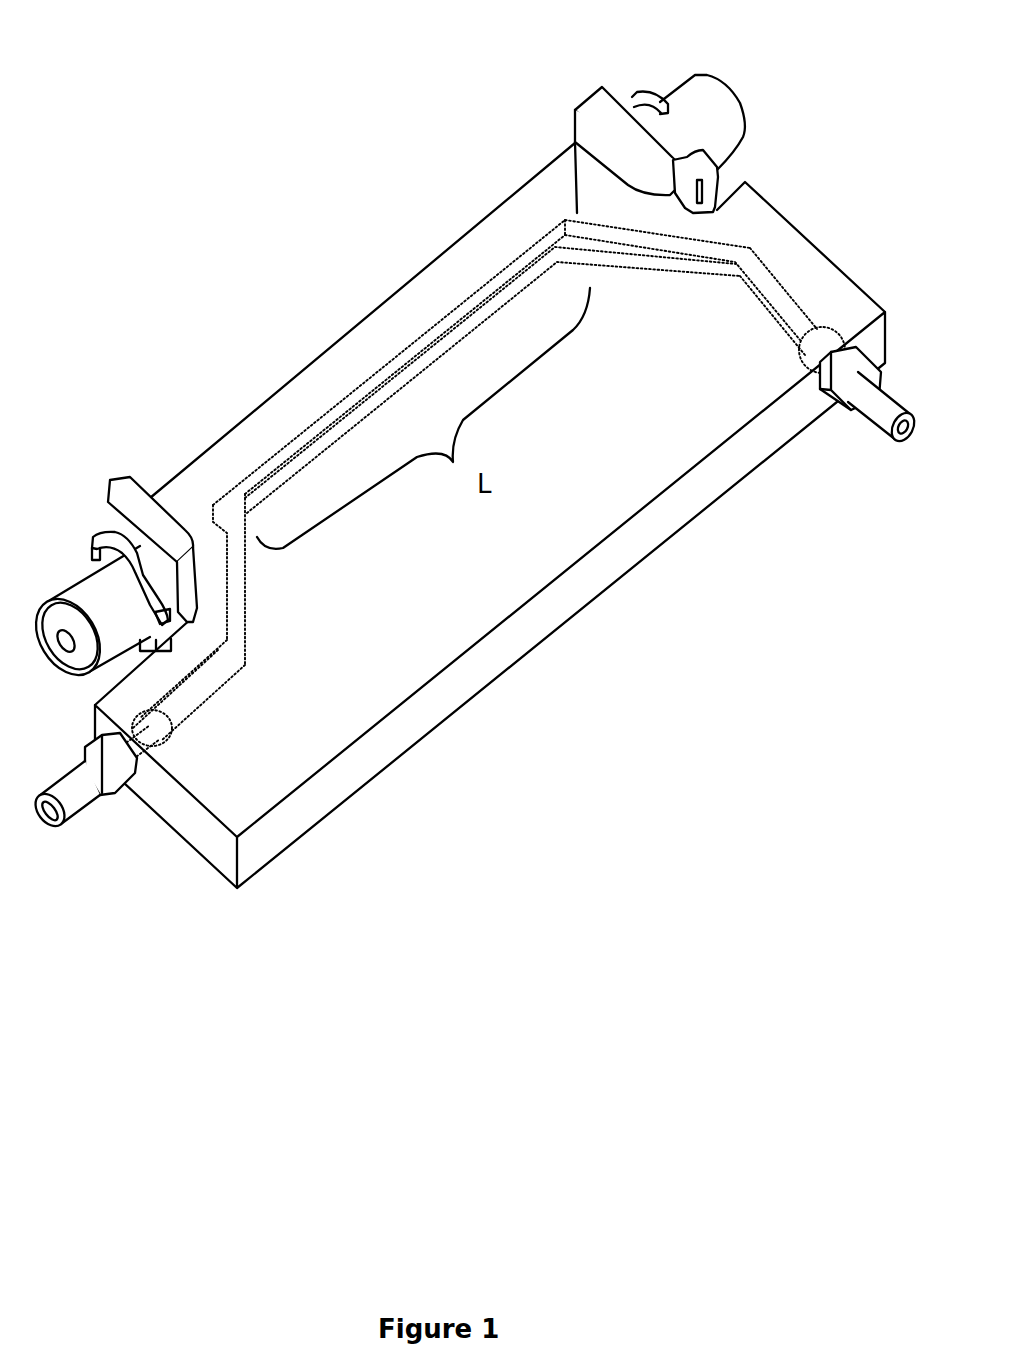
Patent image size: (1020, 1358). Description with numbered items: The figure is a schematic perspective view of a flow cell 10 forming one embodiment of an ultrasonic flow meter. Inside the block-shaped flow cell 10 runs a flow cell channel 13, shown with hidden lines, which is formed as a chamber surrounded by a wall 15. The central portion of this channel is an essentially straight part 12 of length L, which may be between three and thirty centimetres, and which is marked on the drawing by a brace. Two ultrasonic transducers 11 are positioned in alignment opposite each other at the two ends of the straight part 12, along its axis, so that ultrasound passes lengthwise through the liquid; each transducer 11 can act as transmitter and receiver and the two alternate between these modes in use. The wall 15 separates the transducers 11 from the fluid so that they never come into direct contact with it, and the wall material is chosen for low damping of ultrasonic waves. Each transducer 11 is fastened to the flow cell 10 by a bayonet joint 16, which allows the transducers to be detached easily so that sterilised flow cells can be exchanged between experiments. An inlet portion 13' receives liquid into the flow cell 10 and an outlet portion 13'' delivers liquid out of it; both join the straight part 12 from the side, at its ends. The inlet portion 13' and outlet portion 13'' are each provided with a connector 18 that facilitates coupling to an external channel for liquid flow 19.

The flow cell 10 is at (440, 588).
The ultrasonic transducer 11 is at (701, 108).
The essentially straight part 12 is at (497, 290).
The flow cell channel 13 is at (701, 200).
The inlet portion 13' is at (218, 780).
The outlet portion 13'' is at (815, 274).
The wall 15 is at (577, 210).
The bayonet joint 16 is at (635, 95).
The connector 18 is at (840, 370).
The channel for liquid flow 19 is at (877, 410).